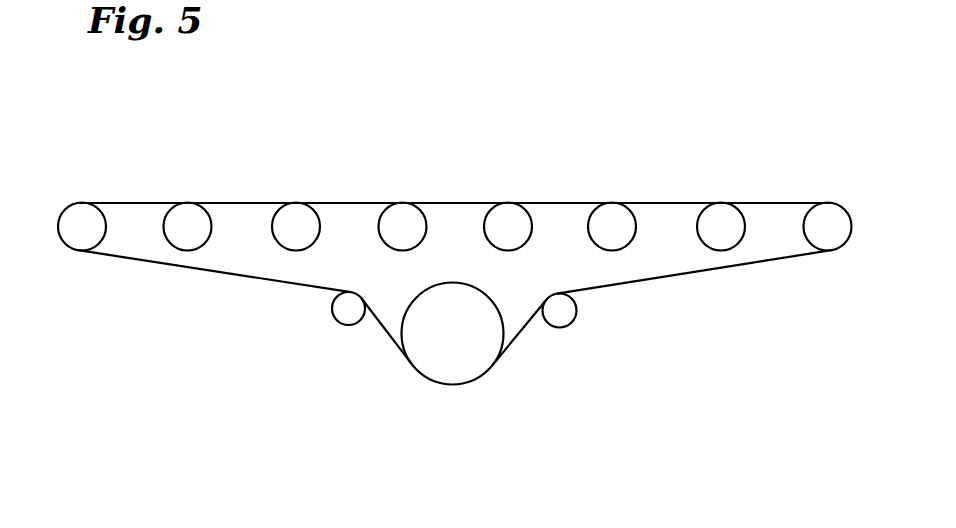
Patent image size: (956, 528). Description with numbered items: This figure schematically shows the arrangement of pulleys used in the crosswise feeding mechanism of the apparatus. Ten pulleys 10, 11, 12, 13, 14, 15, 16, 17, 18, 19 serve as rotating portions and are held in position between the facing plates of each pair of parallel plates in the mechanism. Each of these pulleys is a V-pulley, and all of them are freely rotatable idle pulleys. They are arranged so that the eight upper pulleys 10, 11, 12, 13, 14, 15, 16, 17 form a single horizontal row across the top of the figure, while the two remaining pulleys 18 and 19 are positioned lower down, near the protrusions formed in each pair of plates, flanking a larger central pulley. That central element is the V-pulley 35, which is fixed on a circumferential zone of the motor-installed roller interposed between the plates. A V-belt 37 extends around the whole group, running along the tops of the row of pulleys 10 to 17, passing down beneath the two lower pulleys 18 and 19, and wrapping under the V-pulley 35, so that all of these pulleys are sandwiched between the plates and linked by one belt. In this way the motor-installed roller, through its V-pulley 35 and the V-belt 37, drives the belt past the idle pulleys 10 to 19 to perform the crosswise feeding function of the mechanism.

The pulley 10 is at (89, 213).
The pulley 11 is at (192, 213).
The pulley 12 is at (304, 212).
The pulley 13 is at (406, 213).
The pulley 14 is at (518, 213).
The pulley 15 is at (617, 213).
The pulley 16 is at (725, 212).
The pulley 17 is at (828, 220).
The pulley 18 is at (353, 311).
The pulley 19 is at (560, 309).
The V-pulley 35 is at (462, 385).
The V-belt 37 is at (643, 282).